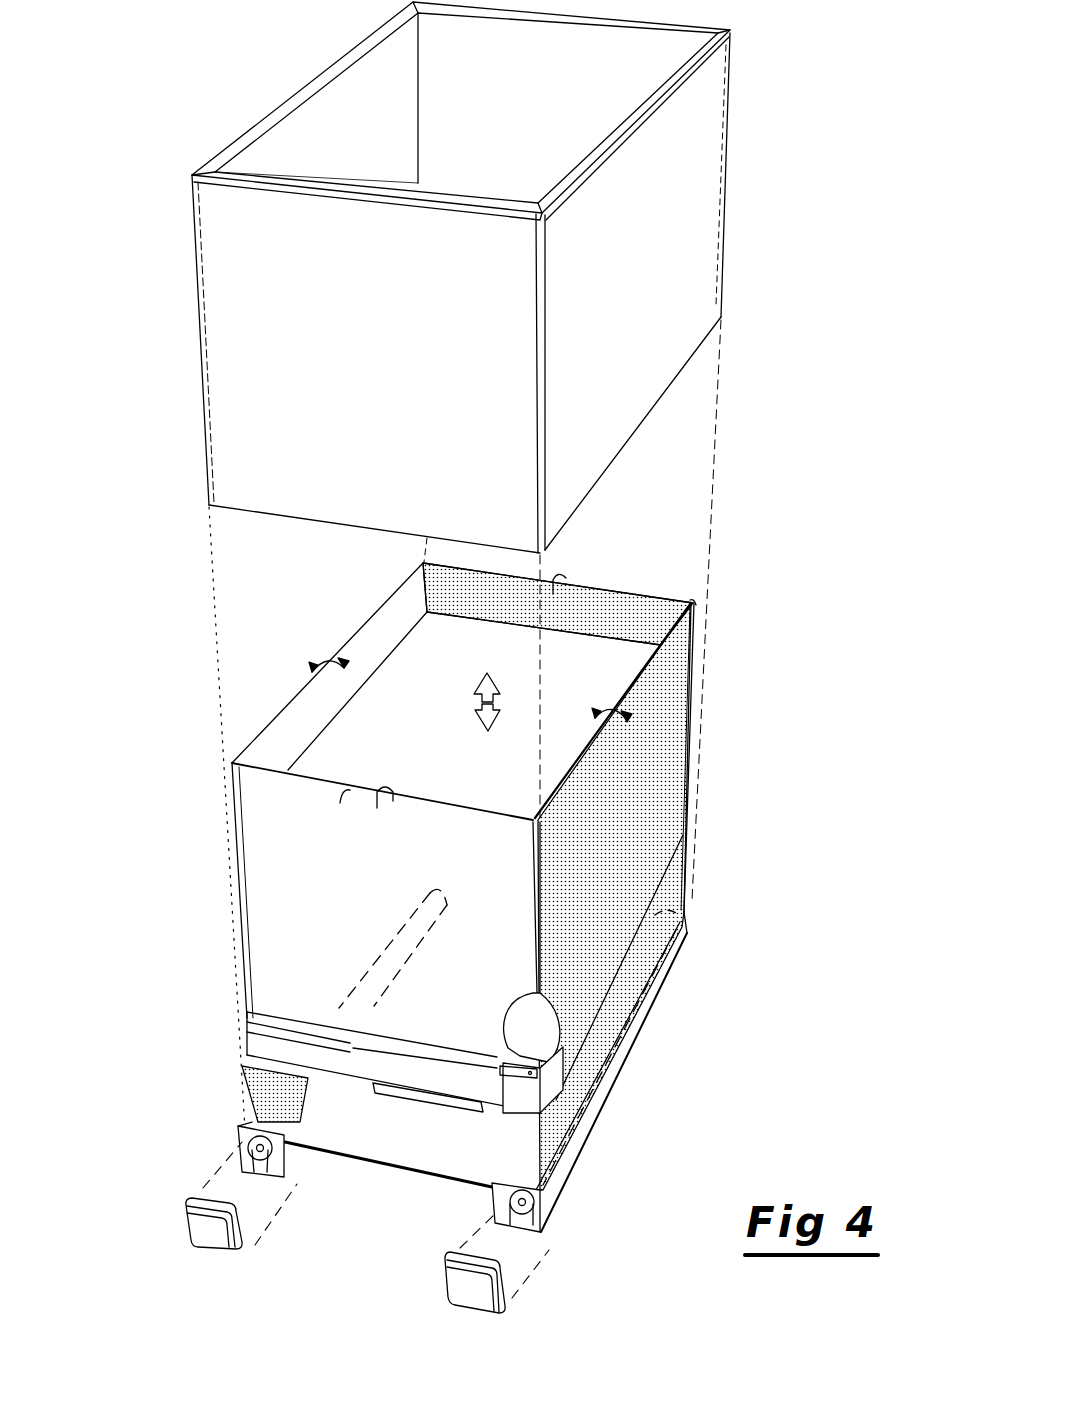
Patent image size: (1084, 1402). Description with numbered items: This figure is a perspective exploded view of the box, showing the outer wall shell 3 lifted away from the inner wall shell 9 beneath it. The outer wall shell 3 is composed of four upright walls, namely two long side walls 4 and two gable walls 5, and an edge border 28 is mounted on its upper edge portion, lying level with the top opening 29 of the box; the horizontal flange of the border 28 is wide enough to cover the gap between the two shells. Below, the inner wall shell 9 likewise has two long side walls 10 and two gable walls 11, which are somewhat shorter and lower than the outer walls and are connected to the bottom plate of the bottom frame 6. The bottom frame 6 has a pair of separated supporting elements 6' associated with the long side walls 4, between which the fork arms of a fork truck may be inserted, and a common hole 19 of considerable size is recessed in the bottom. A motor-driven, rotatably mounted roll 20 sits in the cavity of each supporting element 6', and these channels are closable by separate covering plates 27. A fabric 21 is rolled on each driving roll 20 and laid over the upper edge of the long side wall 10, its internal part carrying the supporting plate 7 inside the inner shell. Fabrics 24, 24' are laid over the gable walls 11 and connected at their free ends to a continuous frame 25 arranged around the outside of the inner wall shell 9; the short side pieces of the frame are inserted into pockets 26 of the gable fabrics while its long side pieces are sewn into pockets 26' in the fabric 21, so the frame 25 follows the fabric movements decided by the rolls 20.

The outer wall shell 3 is at (727, 170).
The long side wall 4 is at (662, 360).
The gable wall 5 is at (230, 417).
The bottom frame 6 is at (496, 1072).
The supporting element 6' is at (417, 1190).
The supporting plate 7 is at (397, 672).
The inner wall shell 9 is at (698, 693).
The long side wall 10 is at (547, 1015).
The gable wall 11 is at (518, 1035).
The common hole 19 is at (403, 1093).
The driving roll 20 is at (508, 1200).
The fabric 21 is at (283, 740).
The fabric 24 is at (449, 691).
The fabric 24' is at (558, 590).
The continuous frame 25 is at (507, 1080).
The pocket 26 is at (393, 1032).
The pocket 26' is at (613, 1010).
The covering plate 27 is at (455, 1287).
The edge border 28 is at (287, 108).
The top opening 29 is at (353, 72).